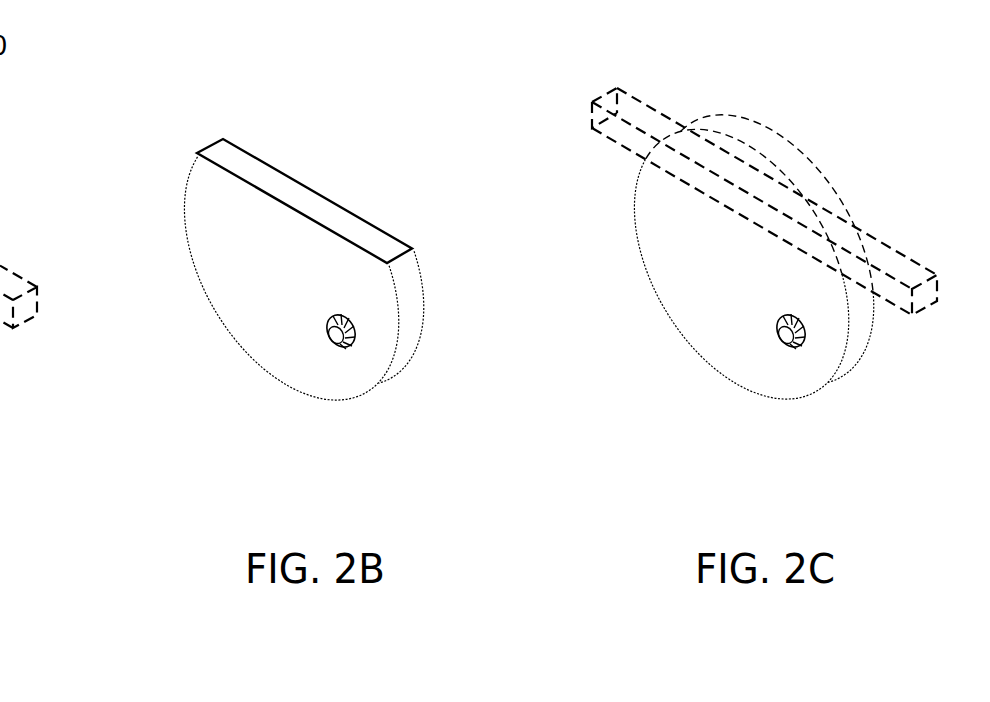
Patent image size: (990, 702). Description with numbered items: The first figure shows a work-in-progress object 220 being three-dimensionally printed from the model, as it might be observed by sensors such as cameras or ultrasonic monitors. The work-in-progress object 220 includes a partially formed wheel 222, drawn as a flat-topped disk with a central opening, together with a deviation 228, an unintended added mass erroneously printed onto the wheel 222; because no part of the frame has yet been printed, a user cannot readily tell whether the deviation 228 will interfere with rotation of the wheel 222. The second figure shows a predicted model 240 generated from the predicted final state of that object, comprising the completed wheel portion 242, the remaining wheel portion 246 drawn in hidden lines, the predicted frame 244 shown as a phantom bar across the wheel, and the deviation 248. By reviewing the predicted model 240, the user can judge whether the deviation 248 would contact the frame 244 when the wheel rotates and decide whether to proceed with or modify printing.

In FIG. 2B, the work-in-progress object 220 is at (426, 71).
In FIG. 2B, the partially formed wheel 222 is at (292, 297).
In FIG. 2B, the deviation 228 is at (365, 345).
In FIG. 2C, the predicted model 240 is at (876, 71).
In FIG. 2C, the completed wheel portion 242 is at (788, 257).
In FIG. 2C, the predicted frame 244 is at (606, 136).
In FIG. 2C, the remaining wheel portion 246 is at (735, 116).
In FIG. 2C, the deviation 248 is at (843, 362).